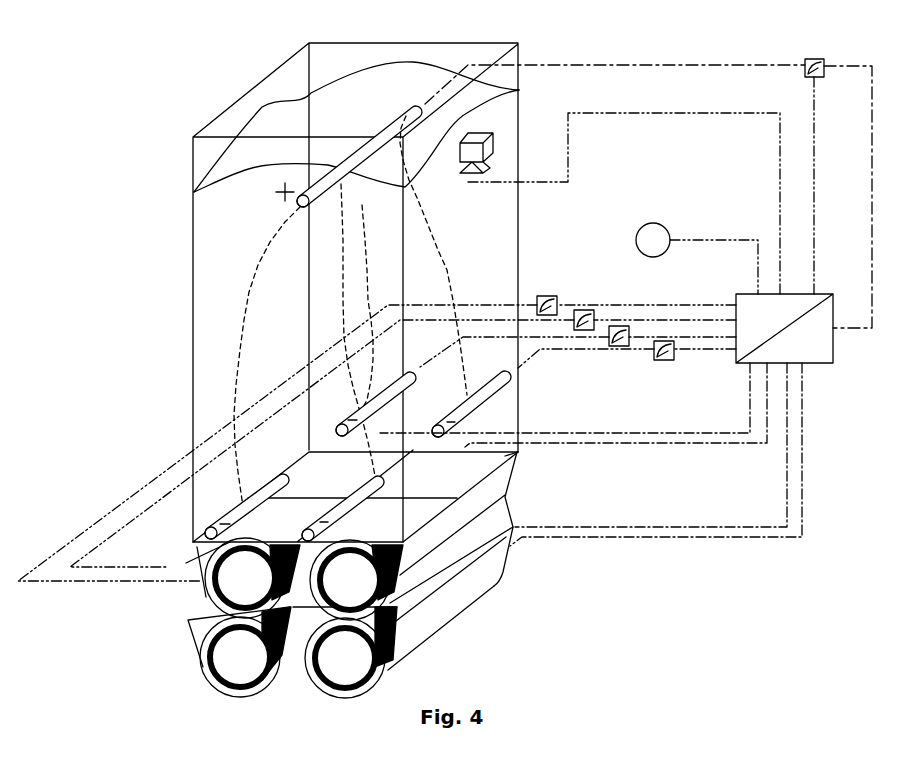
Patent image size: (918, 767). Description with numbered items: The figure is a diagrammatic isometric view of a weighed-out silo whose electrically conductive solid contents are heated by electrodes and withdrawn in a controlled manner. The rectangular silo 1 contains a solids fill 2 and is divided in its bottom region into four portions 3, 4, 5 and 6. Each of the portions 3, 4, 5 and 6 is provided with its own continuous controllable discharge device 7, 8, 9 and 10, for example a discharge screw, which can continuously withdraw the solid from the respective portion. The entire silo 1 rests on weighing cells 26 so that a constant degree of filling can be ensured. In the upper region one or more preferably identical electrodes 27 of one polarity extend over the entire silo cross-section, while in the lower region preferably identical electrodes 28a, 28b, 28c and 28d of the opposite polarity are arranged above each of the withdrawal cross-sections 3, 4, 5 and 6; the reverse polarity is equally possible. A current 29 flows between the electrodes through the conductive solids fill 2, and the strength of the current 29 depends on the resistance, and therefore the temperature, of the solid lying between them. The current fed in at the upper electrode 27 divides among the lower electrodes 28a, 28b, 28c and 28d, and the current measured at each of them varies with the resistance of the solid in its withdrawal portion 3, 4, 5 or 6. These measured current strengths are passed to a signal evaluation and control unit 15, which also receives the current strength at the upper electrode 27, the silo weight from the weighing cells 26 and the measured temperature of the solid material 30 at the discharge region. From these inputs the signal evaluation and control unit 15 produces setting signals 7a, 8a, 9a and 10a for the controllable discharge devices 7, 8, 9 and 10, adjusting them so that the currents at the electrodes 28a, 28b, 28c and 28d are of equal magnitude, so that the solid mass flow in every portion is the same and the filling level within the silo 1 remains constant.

The silo 1 is at (519, 102).
The solids fill 2 is at (362, 85).
The portion 3 is at (230, 542).
The portion 4 is at (415, 520).
The portion 5 is at (305, 460).
The portion 6 is at (505, 456).
The controllable discharge device 7 is at (215, 598).
The controllable discharge device 8 is at (370, 558).
The controllable discharge device 9 is at (212, 664).
The controllable discharge device 10 is at (376, 660).
The setting signal 7a is at (577, 433).
The setting signal 8a is at (593, 445).
The setting signal 9a is at (640, 527).
The setting signal 10a is at (660, 537).
The signal evaluation and control unit 15 is at (836, 346).
The weighing cells 26 is at (493, 143).
The electrode 27 is at (393, 123).
The electrode 28a is at (230, 515).
The electrode 28b is at (333, 512).
The electrode 28c is at (357, 417).
The electrode 28d is at (505, 380).
The current 29 is at (262, 273).
The measured temperature of the solid material 30 is at (661, 230).